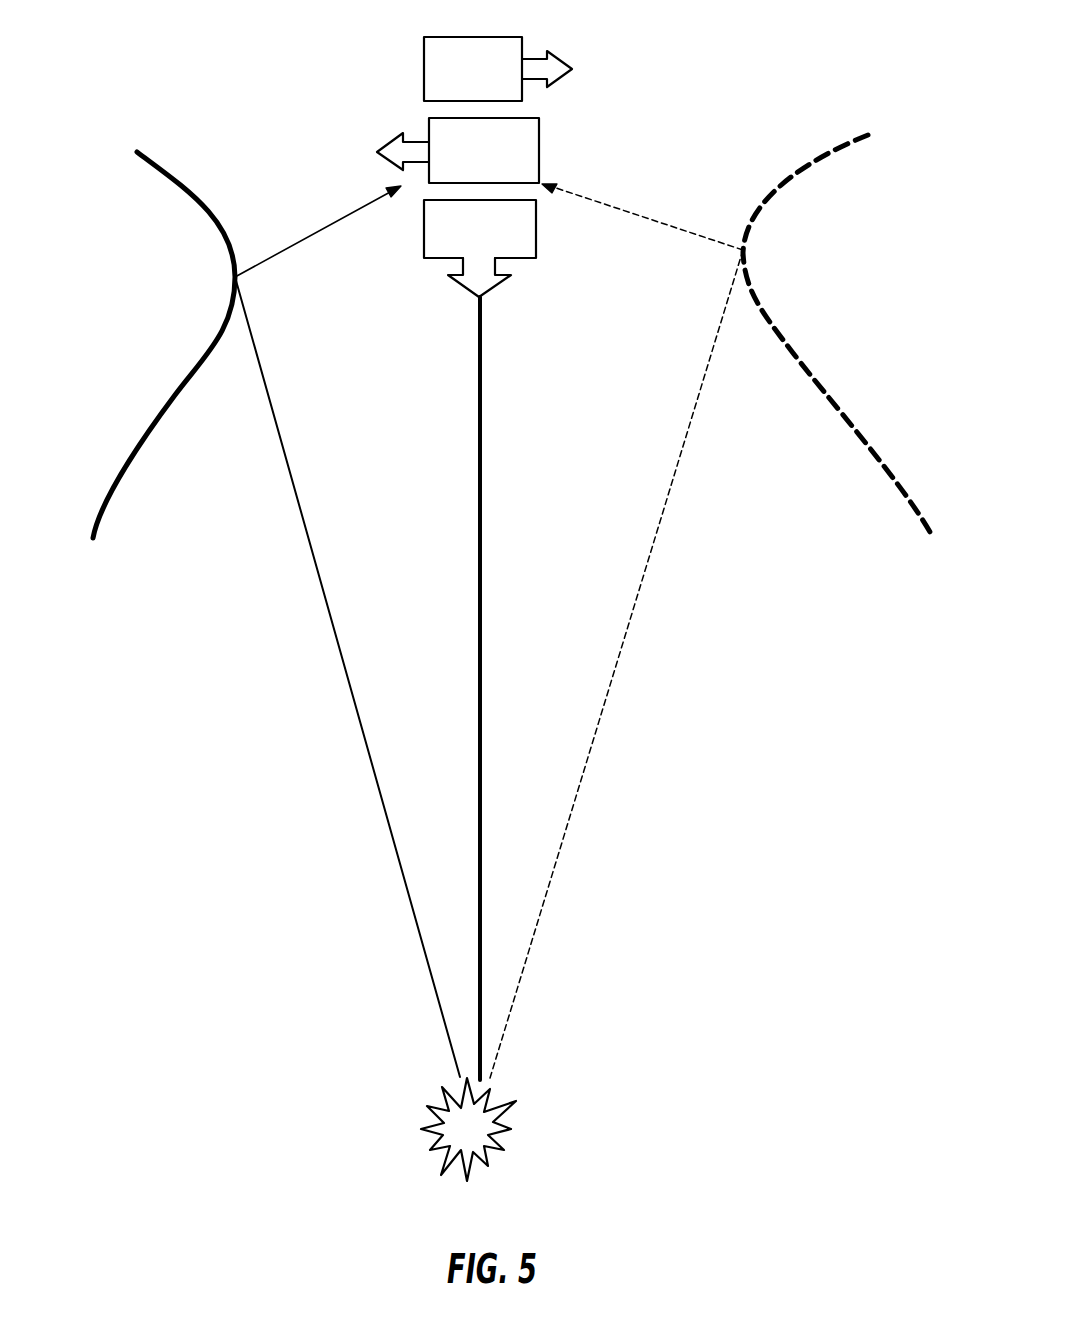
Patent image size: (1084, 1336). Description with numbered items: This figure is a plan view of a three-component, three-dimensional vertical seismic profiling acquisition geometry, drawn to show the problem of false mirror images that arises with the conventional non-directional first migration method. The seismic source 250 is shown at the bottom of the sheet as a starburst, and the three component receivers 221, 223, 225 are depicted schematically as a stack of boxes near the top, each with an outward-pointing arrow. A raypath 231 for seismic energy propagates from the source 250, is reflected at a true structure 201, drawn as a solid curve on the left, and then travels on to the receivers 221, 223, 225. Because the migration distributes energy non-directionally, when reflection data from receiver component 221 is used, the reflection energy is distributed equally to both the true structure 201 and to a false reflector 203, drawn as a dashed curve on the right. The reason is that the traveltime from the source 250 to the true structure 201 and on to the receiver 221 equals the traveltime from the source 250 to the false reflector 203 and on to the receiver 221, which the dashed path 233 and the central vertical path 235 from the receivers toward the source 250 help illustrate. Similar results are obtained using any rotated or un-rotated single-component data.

The true structure 201 is at (180, 183).
The false reflector 203 is at (785, 187).
The three component receiver 221 is at (475, 37).
The three component receiver 223 is at (540, 150).
The three component receiver 225 is at (536, 230).
The raypath 231 is at (328, 603).
The second ray path (dashed) 233 is at (602, 712).
The central ray path 235 is at (482, 443).
The source 250 is at (508, 1112).